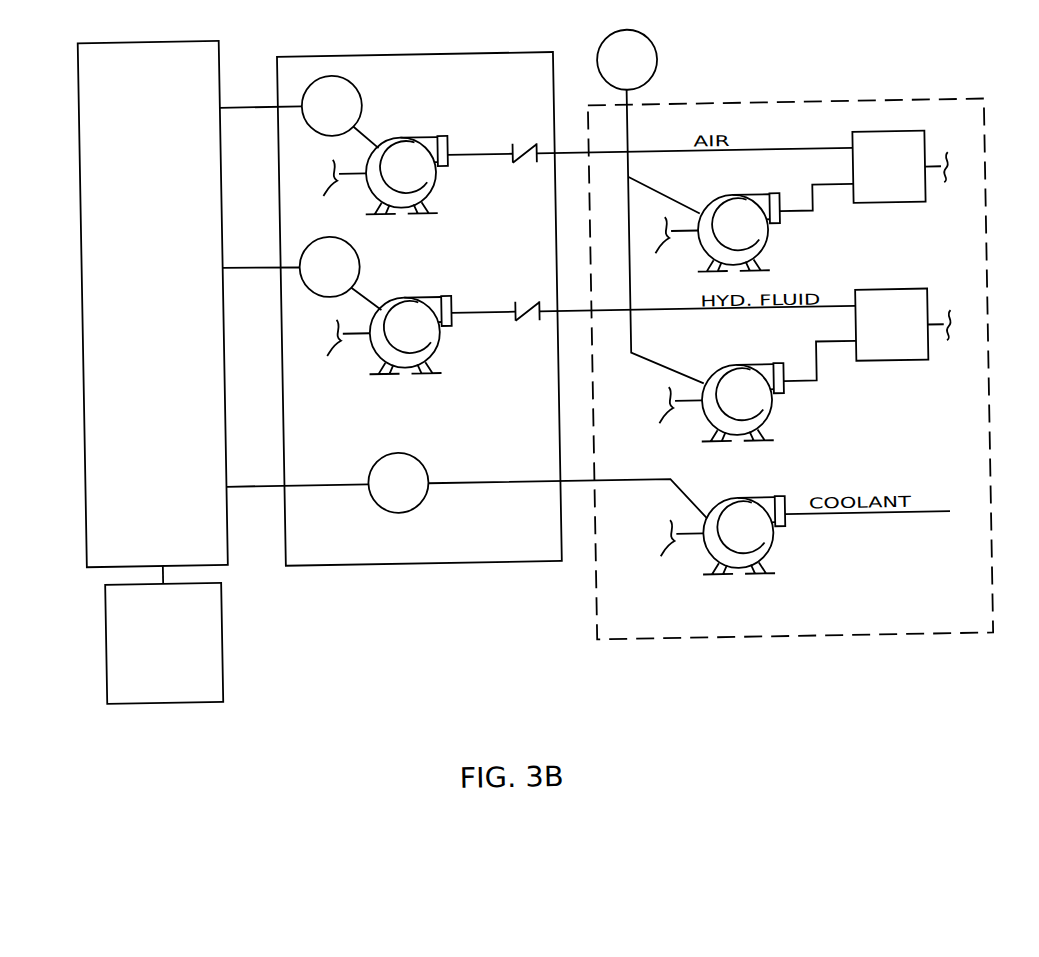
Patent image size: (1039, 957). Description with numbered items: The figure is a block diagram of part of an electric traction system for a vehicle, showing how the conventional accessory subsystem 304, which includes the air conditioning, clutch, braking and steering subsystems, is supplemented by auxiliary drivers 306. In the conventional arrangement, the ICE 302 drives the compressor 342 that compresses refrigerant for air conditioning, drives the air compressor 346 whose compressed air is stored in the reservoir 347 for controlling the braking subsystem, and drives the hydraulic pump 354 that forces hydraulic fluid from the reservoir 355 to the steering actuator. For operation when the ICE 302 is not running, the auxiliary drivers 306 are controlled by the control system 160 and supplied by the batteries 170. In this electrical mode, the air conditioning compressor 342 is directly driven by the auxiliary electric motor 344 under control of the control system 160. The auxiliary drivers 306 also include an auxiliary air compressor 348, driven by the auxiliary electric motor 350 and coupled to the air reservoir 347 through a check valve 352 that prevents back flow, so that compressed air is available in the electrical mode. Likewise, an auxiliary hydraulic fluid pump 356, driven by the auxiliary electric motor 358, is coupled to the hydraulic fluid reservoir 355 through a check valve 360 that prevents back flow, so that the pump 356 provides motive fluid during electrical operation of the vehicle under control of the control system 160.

The control system 160 is at (143, 491).
The batteries 170 is at (140, 681).
The ICE 302 is at (615, 72).
The subsystem 304 is at (865, 617).
The auxiliary drivers 306 is at (501, 551).
The compressor 342 is at (723, 535).
The auxiliary electric motor 344 is at (379, 491).
The air compressor 346 is at (717, 232).
The reservoir 347 is at (875, 184).
The auxiliary air compressor 348 is at (385, 175).
The auxiliary electric motor 350 is at (319, 113).
The check valve 352 is at (524, 140).
The hydraulic pump 354 is at (721, 402).
The hydraulic fluid reservoir 355 is at (875, 342).
The auxiliary hydraulic fluid pump 356 is at (389, 335).
The auxiliary electric motor 358 is at (314, 274).
The check valve 360 is at (525, 293).